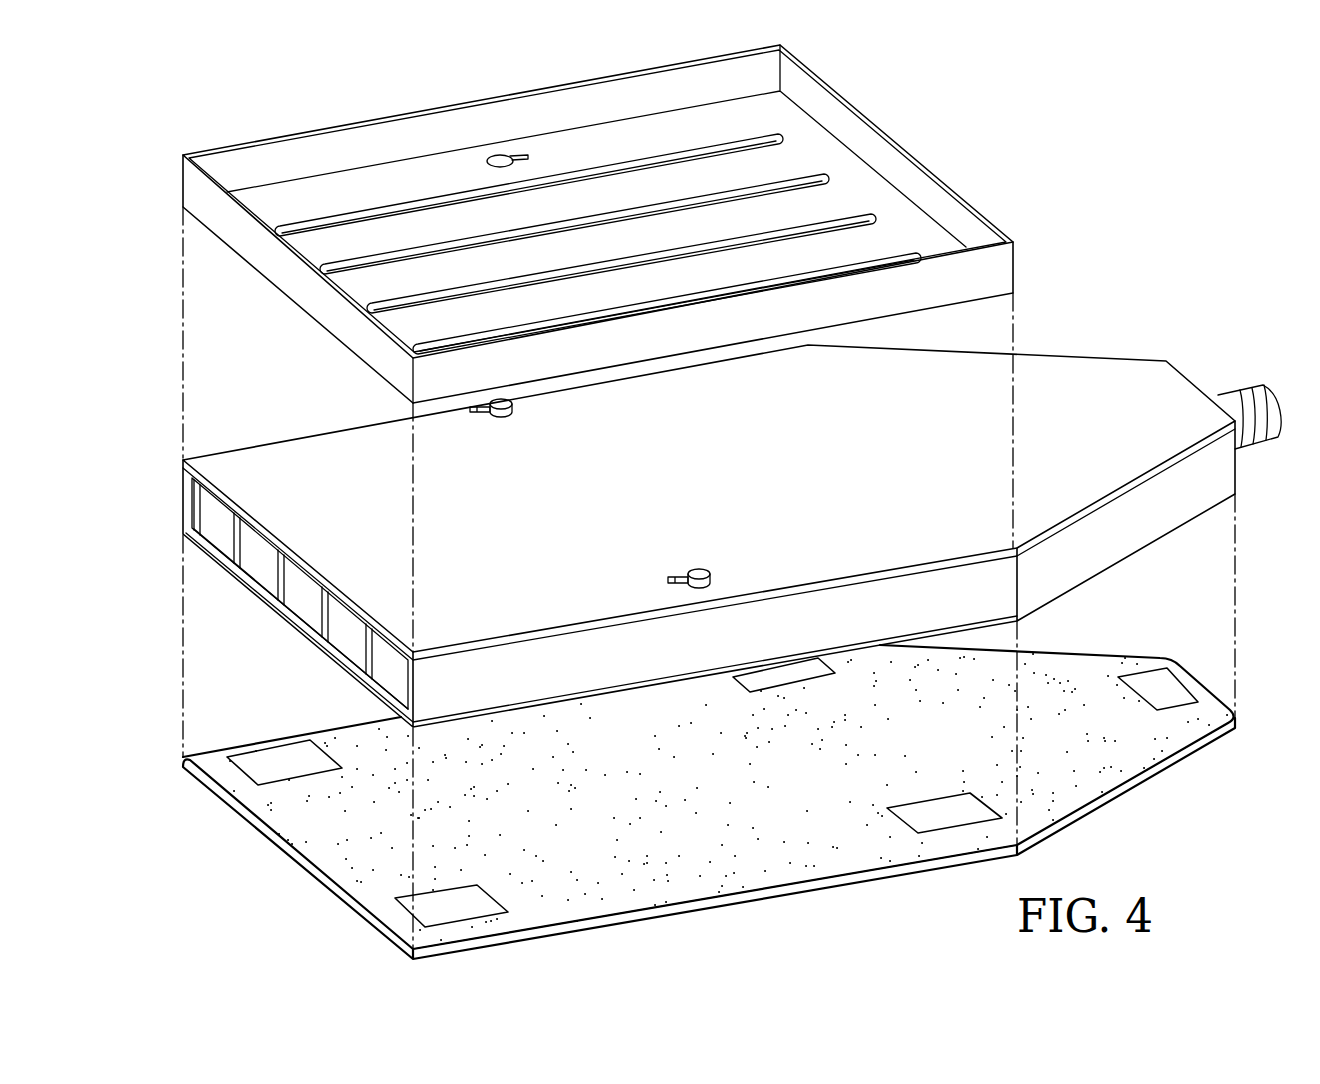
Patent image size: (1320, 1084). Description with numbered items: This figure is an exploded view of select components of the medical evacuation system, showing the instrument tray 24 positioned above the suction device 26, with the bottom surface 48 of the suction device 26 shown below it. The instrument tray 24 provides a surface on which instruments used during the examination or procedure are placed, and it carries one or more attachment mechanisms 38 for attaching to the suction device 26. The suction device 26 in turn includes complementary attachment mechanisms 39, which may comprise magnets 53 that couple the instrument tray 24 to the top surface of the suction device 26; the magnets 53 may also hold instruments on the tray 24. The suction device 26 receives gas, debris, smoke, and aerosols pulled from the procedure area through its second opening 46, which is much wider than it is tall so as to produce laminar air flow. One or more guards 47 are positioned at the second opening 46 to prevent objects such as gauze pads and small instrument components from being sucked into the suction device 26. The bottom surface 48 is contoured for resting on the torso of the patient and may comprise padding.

The instrument tray 24 is at (889, 132).
The suction device 26 is at (700, 511).
The attachment mechanism 38 is at (498, 155).
The attachment mechanism 39 is at (482, 415).
The second opening 46 is at (307, 601).
The guard 47 is at (227, 538).
The bottom surface 48 is at (312, 838).
The magnet 53 is at (505, 415).